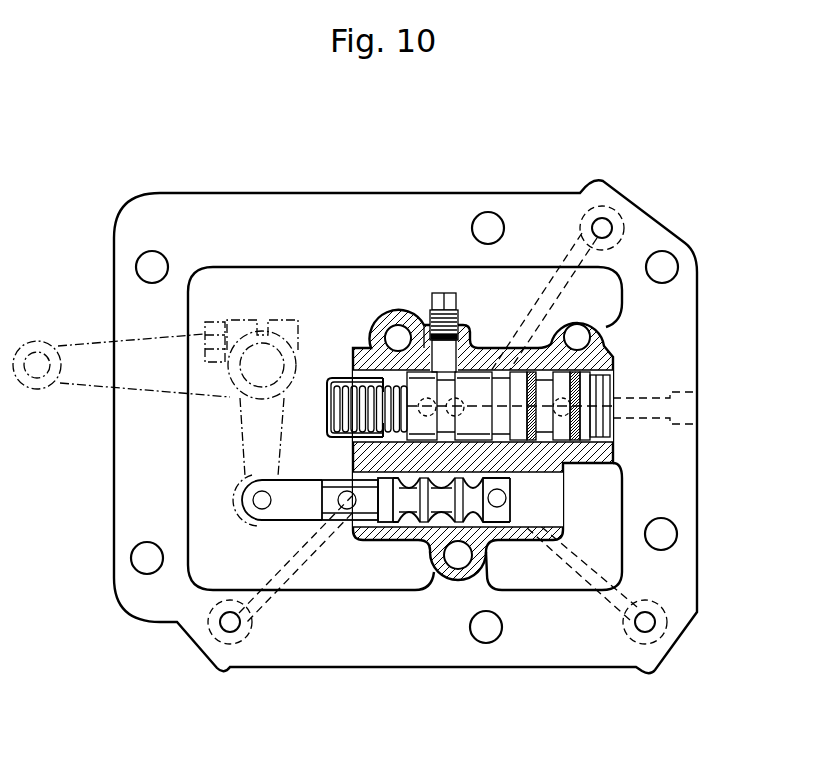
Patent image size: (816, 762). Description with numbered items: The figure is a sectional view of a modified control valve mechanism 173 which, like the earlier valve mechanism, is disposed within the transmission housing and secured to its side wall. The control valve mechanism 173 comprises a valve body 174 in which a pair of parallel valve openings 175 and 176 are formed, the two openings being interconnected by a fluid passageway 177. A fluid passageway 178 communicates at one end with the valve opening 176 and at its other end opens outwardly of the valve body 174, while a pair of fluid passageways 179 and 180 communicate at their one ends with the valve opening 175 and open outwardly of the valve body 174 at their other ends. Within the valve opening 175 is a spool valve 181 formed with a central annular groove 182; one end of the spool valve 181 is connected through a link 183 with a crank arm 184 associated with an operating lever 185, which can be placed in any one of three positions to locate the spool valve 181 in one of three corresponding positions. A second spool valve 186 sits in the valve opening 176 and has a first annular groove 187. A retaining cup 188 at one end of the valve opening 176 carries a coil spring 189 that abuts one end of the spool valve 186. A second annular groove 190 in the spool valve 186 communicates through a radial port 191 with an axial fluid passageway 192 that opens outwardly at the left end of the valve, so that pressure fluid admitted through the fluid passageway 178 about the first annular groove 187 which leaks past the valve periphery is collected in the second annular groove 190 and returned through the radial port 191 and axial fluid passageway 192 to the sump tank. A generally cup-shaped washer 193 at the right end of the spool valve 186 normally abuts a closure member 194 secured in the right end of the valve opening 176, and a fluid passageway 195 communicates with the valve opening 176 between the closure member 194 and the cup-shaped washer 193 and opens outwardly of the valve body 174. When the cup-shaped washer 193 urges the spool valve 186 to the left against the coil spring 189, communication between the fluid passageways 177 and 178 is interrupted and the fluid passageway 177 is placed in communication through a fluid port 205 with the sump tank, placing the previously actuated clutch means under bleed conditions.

The control valve mechanism 173 is at (712, 528).
The valve body 174 is at (522, 662).
The valve opening 175 is at (503, 528).
The valve opening 176 is at (518, 372).
The fluid passageway 177 is at (460, 452).
The fluid passageway 178 is at (573, 258).
The fluid passageway 179 is at (275, 571).
The fluid passageway 180 is at (567, 545).
The spool valve 181 is at (377, 541).
The central annular groove 182 is at (428, 541).
The link 183 is at (285, 508).
The crank arm 184 is at (243, 420).
The operating lever 185 is at (80, 380).
The spool valve 186 is at (387, 350).
The first annular groove 187 is at (455, 370).
The retaining cup 188 is at (327, 429).
The coil spring 189 is at (338, 438).
The second annular groove 190 is at (497, 380).
The radial port 191 is at (505, 447).
The axial fluid passageway 192 is at (406, 460).
The cup-shaped washer 193 is at (567, 308).
The closure member 194 is at (553, 392).
The fluid passageway 195 is at (638, 415).
The fluid port 205 is at (423, 365).